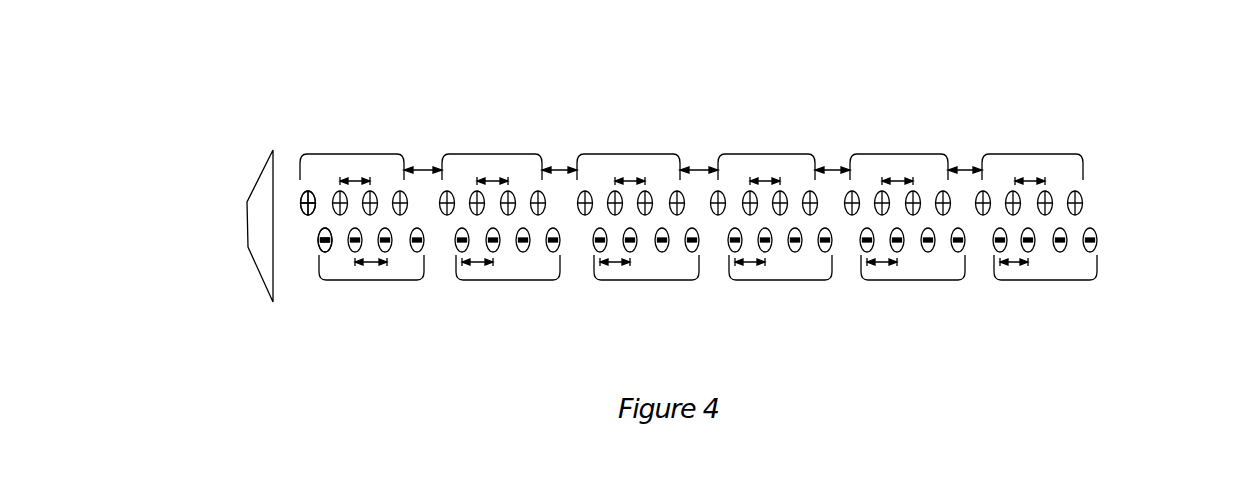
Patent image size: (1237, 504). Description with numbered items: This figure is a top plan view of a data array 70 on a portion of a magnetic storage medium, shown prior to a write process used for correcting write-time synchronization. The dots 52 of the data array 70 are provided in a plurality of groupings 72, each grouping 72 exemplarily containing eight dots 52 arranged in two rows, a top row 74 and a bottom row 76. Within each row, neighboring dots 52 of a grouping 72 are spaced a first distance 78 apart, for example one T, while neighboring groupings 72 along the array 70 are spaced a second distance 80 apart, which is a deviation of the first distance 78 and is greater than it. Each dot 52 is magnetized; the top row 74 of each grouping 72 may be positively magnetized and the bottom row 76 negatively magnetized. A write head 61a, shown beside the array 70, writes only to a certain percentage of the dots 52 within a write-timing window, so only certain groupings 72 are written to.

The data array 70 is at (1097, 135).
The dot grouping 72 is at (357, 153).
The top row 74 is at (1098, 201).
The bottom row 76 is at (1108, 240).
The first distance 78 is at (357, 177).
The second distance 80 is at (428, 178).
The dot 52 is at (300, 212).
The write head 61a is at (255, 262).